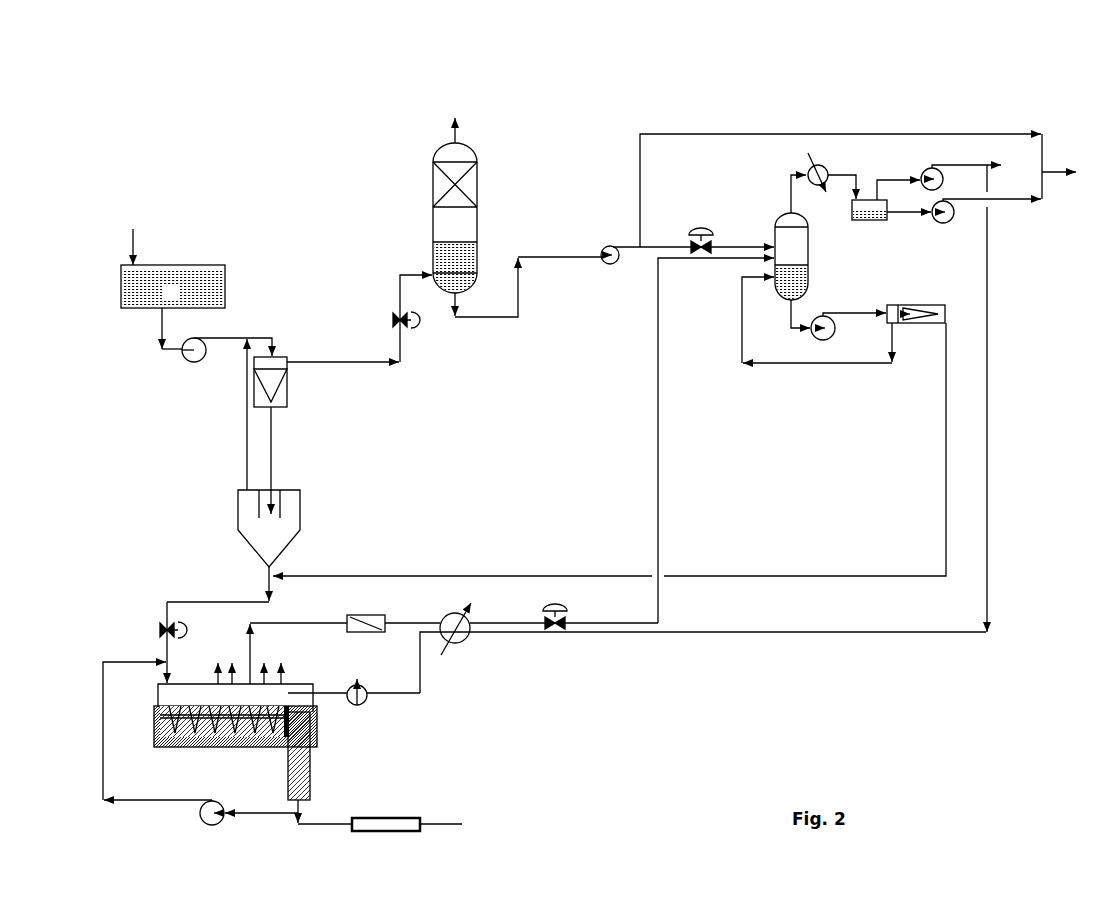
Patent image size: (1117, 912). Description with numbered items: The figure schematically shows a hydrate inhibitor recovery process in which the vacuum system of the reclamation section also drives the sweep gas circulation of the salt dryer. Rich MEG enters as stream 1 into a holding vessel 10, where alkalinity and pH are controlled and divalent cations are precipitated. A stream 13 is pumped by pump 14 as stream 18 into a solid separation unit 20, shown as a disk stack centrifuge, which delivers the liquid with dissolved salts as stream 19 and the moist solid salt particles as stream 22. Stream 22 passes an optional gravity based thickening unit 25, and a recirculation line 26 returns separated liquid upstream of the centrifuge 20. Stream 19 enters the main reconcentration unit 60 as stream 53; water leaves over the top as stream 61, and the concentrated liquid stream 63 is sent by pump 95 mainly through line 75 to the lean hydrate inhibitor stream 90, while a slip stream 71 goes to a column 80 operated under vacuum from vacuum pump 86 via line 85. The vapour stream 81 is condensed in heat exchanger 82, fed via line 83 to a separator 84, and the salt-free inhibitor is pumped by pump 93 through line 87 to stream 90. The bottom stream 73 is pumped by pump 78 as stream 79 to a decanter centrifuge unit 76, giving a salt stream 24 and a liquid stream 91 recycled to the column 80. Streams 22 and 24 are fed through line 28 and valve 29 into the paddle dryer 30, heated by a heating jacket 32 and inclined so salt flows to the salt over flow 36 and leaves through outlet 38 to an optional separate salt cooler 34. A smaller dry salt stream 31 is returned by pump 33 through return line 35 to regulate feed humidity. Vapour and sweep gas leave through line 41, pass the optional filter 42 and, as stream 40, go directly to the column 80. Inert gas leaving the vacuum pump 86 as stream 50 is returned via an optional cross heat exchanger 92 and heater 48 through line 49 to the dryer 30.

The rich MEG stream 1 is at (133, 238).
The holding vessel 10 is at (173, 286).
The stream from holding vessel 13 is at (161, 328).
The pump 14 is at (188, 356).
The stream to solid separation unit 18 is at (235, 337).
The liquid stream with dissolved salts 19 is at (343, 356).
The solid separation unit 20 is at (262, 393).
The stream comprising solid salt particles 22 is at (281, 460).
The stream comprising salt particles 24 is at (609, 450).
The gravity based thickening unit 25 is at (227, 534).
The recirculation line 26 is at (236, 414).
The line 28 is at (218, 584).
The valve 29 is at (163, 642).
The paddle dryer 30 is at (171, 694).
The stream of dry salt particles 31 is at (288, 809).
The heating jacket 32 is at (156, 722).
The pump 33 is at (212, 804).
The salt cooler 34 is at (407, 817).
The return line 35 is at (147, 731).
The salt over flow 36 is at (300, 730).
The outlet 38 is at (306, 837).
The stream downstream filter 40 is at (706, 440).
The line 41 is at (282, 653).
The filter 42 is at (393, 612).
The heater 48 is at (364, 687).
The line 49 is at (354, 685).
The stream comprising mainly inert gas 50 is at (703, 429).
The stream to main reconcentration unit 53 is at (412, 318).
The main reconcentration unit 60 is at (455, 218).
The water vapour stream 61 is at (465, 128).
The liquid stream 63 is at (528, 289).
The slip stream 71 is at (693, 240).
The bottom stream 73 is at (791, 314).
The line 75 is at (826, 190).
The centrifuge unit 76 is at (916, 325).
The pump 78 is at (829, 333).
The stream to centrifuge 79 is at (854, 322).
The column 80 is at (791, 256).
The vapour stream 81 is at (789, 194).
The heat exchanger 82 is at (825, 170).
The line 83 is at (851, 181).
The separator 84 is at (859, 212).
The line 85 is at (898, 182).
The vacuum pump 86 is at (961, 177).
The line 87 is at (909, 224).
The lean hydrate inhibitor stream 90 is at (1069, 166).
The liquid stream 91 is at (817, 329).
The cross heat exchanger 92 is at (490, 625).
The pump 93 is at (986, 215).
The pump 95 is at (609, 268).